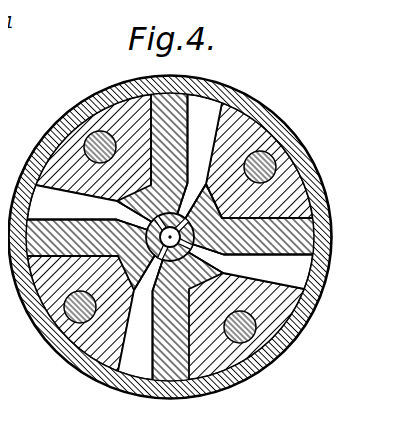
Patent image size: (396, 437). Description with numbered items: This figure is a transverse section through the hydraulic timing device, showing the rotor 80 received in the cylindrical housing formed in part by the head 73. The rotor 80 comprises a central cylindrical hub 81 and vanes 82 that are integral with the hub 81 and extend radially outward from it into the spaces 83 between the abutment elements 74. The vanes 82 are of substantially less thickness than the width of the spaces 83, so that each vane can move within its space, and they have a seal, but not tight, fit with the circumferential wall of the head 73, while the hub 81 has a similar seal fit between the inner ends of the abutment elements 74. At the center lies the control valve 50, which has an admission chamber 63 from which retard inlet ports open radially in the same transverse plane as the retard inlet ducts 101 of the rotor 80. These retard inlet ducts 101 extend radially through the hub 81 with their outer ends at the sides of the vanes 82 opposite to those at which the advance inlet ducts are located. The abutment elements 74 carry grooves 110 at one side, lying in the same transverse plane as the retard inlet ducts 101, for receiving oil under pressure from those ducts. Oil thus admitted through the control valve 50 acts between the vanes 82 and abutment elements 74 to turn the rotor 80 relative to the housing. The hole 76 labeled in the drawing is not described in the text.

The head 73 is at (90, 84).
The abutment elements 74 is at (68, 355).
The vanes 82 is at (163, 86).
The rotor 80 is at (183, 97).
The spaces 83 is at (199, 111).
The hub 81 is at (209, 203).
The admission chamber 63 is at (137, 177).
The grooves 110 is at (105, 188).
The control valve 50 is at (138, 228).
The retard inlet ducts 101 is at (208, 257).
The bolt hole 76 is at (61, 309).